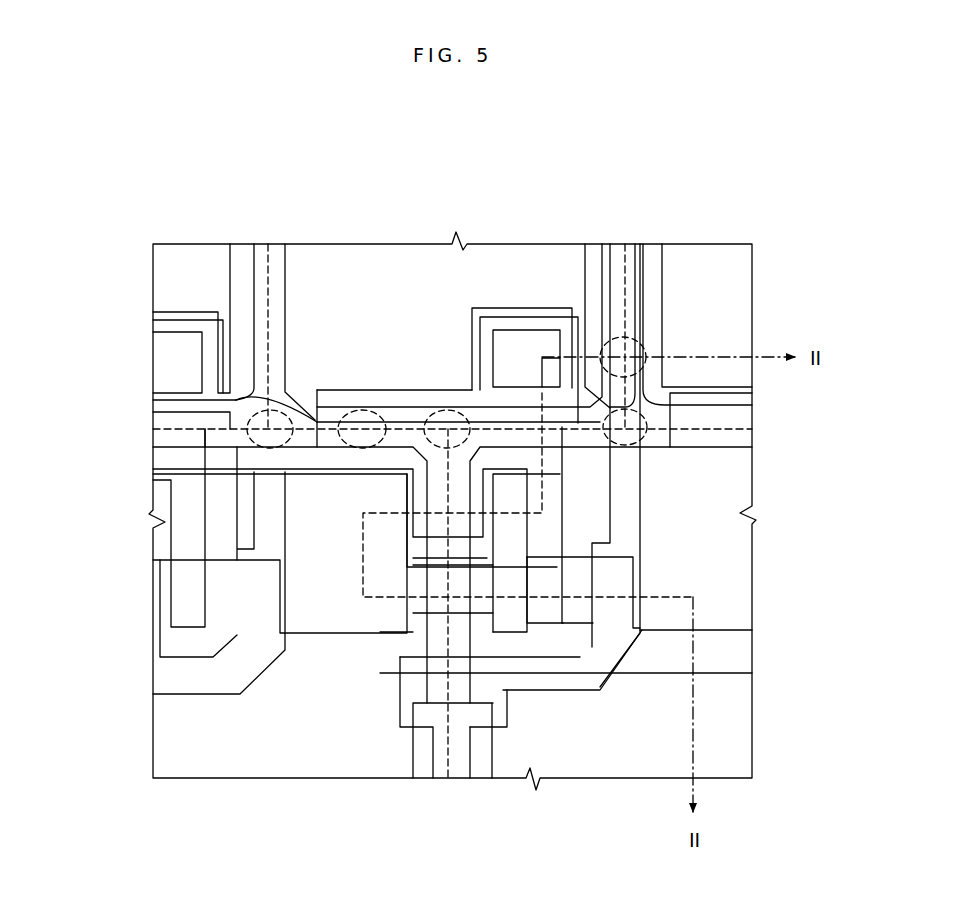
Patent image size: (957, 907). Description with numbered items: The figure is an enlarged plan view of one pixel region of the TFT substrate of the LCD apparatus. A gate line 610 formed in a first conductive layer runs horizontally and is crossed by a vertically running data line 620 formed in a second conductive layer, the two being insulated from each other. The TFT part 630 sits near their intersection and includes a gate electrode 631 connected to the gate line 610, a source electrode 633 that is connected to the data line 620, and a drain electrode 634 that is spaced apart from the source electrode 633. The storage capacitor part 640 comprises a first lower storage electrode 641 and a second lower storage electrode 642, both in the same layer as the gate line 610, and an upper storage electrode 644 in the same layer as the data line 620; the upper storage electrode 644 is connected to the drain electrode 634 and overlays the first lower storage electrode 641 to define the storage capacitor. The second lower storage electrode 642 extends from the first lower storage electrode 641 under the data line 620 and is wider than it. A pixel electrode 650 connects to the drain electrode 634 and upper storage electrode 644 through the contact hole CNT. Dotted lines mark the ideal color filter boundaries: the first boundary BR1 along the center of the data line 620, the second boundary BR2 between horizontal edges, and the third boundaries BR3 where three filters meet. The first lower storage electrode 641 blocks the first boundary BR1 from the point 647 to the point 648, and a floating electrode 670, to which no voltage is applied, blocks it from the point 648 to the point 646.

The gate line 610 is at (727, 671).
The data line 620 is at (601, 252).
The TFT part 630 is at (578, 620).
The gate electrode 631 is at (577, 580).
The source electrode 633 is at (603, 550).
The drain electrode 634 is at (550, 570).
The storage capacitor part 640 is at (318, 458).
The first lower storage electrode 641 is at (320, 474).
The second lower storage electrode 642 is at (230, 273).
The upper storage electrode 644 is at (153, 407).
The point 646 is at (440, 612).
The point 647 is at (424, 410).
The point 648 is at (447, 560).
The pixel electrode 650 is at (287, 345).
The floating electrode 670 is at (413, 580).
The first boundary BR1 is at (637, 337).
The second boundary BR2 is at (339, 409).
The third boundary BR3 is at (647, 421).
The contact hole CNT is at (518, 330).